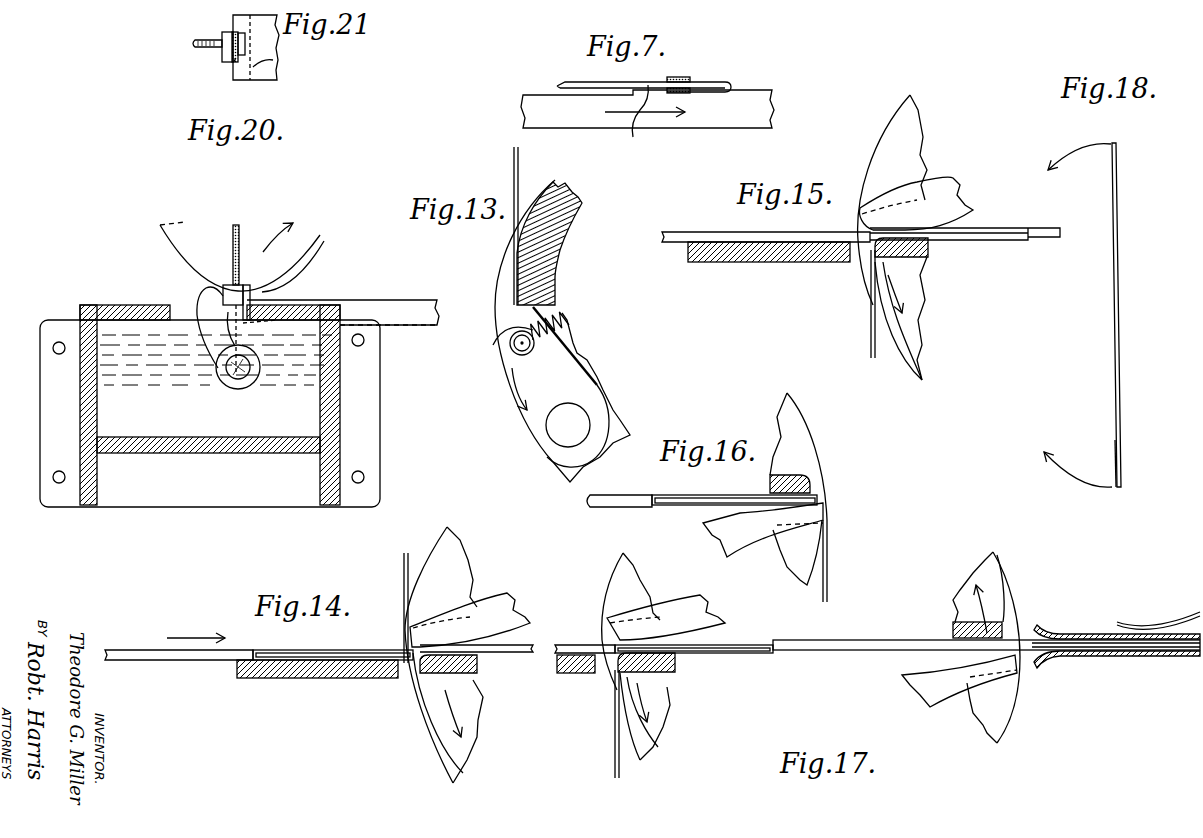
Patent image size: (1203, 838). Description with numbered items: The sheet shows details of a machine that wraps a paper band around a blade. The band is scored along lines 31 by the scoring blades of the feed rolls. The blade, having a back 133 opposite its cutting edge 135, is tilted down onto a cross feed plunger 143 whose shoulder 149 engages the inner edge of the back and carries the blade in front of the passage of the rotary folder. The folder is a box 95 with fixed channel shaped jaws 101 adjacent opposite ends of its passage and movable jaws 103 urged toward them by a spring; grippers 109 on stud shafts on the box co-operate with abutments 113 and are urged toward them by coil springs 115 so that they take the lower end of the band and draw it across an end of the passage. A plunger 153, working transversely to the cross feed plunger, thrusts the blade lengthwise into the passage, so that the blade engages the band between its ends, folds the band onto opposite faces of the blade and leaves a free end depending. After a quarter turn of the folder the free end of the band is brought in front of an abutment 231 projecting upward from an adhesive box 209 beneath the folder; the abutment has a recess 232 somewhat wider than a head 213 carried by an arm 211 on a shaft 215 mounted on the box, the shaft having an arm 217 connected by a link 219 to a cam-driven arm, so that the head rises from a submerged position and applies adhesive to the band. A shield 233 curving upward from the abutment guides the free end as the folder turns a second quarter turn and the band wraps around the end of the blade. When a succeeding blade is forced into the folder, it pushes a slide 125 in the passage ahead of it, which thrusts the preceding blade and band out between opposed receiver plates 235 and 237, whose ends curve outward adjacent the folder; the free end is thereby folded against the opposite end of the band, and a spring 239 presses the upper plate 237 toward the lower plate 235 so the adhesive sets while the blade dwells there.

In FIG. 18, the scoring lines 31 is at (1134, 392).
In FIG. 20, the box 95 is at (165, 241).
In FIG. 13, the box 95 is at (557, 470).
In FIG. 15, the box 95 is at (880, 156).
In FIG. 16, the box 95 is at (820, 448).
In FIG. 14, the box 95 is at (430, 572).
In FIG. 17, the box 95 is at (620, 588).
In FIG. 15, the fixed channel shaped jaws 101 is at (873, 258).
In FIG. 16, the fixed channel shaped jaws 101 is at (813, 480).
In FIG. 14, the fixed channel shaped jaws 101 is at (420, 675).
In FIG. 17, the fixed channel shaped jaws 101 is at (620, 662).
In FIG. 15, the movable jaws 103 is at (870, 218).
In FIG. 16, the movable jaws 103 is at (808, 515).
In FIG. 14, the movable jaws 103 is at (412, 628).
In FIG. 17, the movable jaws 103 is at (610, 618).
In FIG. 13, the grippers 109 is at (500, 330).
In FIG. 13, the abutments 113 is at (517, 287).
In FIG. 13, the coil springs 115 is at (510, 340).
In FIG. 15, the slide 125 is at (1046, 228).
In FIG. 16, the slide 125 is at (625, 504).
In FIG. 14, the slide 125 is at (490, 653).
In FIG. 17, the slide 125 is at (843, 643).
In FIG. 7, the back 133 is at (707, 80).
In FIG. 7, the cutting edge 135 is at (625, 79).
In FIG. 7, the cross feed plunger 143 is at (730, 122).
In FIG. 7, the shoulder 149 is at (650, 120).
In FIG. 15, the plunger 153 is at (747, 234).
In FIG. 14, the plunger 153 is at (148, 655).
In FIG. 17, the plunger 153 is at (598, 645).
In FIG. 20, the box 209 is at (340, 410).
In FIG. 21, the arm 211 is at (200, 48).
In FIG. 20, the arm 211 is at (201, 295).
In FIG. 21, the head 213 is at (224, 38).
In FIG. 20, the head 213 is at (227, 291).
In FIG. 20, the shaft 215 is at (248, 379).
In FIG. 20, the arm 217 is at (303, 304).
In FIG. 20, the link 219 is at (437, 300).
In FIG. 21, the abutment 231 is at (277, 66).
In FIG. 20, the abutment 231 is at (251, 292).
In FIG. 21, the recess 232 is at (233, 62).
In FIG. 20, the shield 233 is at (316, 243).
In FIG. 17, the lower plate 235 is at (1097, 657).
In FIG. 17, the upper plate 237 is at (1083, 632).
In FIG. 17, the spring 239 is at (1170, 621).